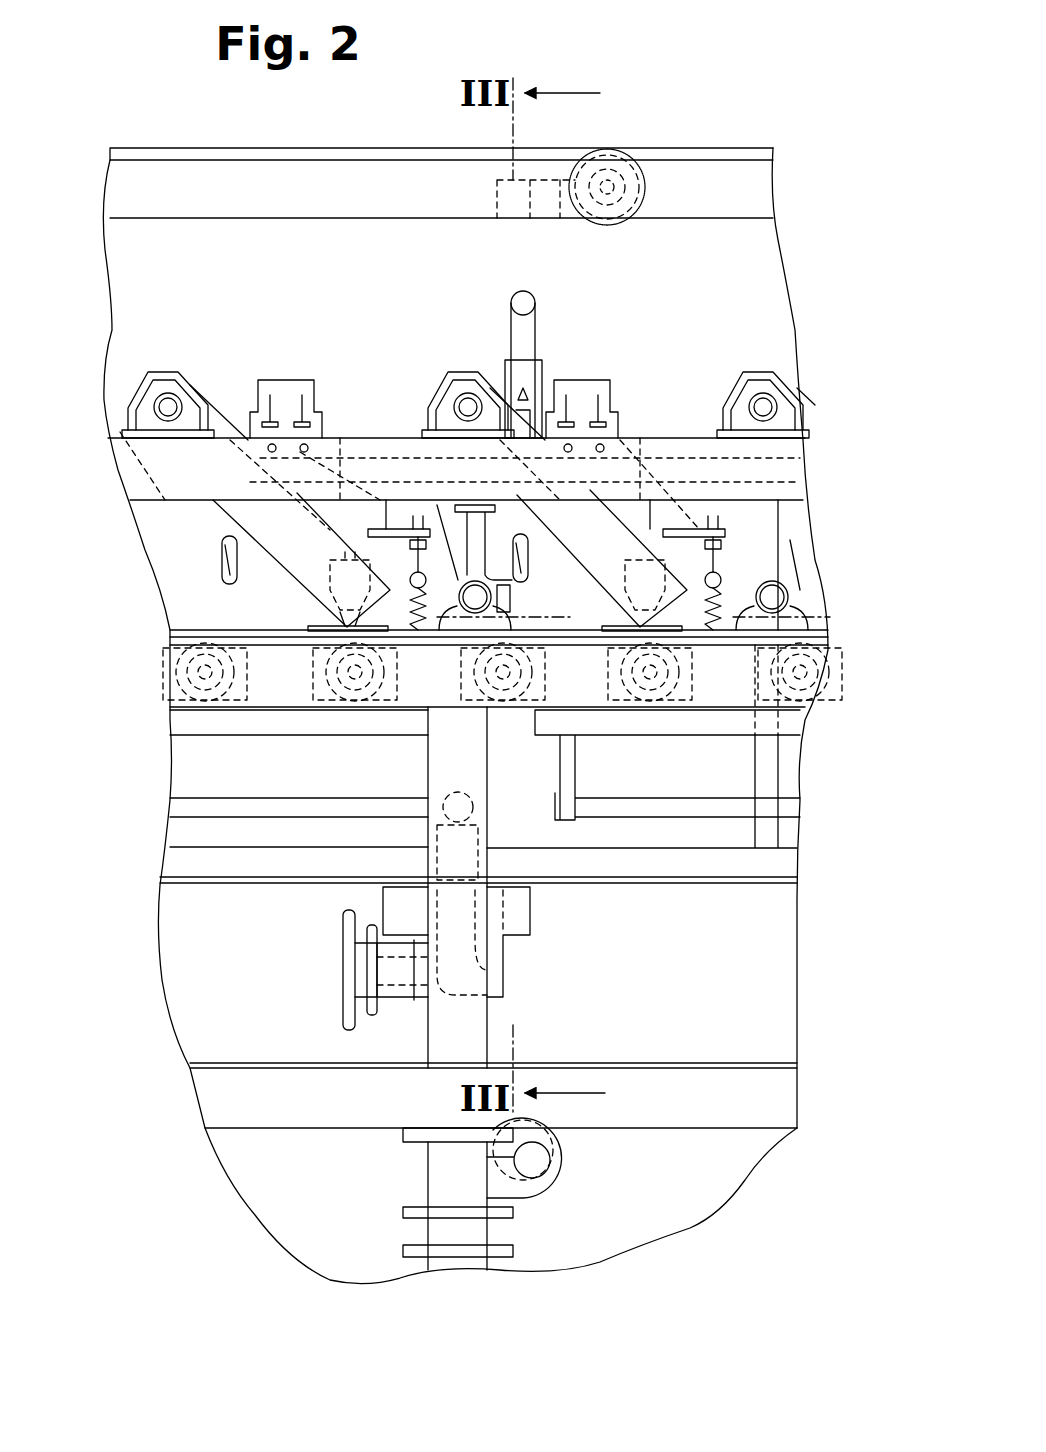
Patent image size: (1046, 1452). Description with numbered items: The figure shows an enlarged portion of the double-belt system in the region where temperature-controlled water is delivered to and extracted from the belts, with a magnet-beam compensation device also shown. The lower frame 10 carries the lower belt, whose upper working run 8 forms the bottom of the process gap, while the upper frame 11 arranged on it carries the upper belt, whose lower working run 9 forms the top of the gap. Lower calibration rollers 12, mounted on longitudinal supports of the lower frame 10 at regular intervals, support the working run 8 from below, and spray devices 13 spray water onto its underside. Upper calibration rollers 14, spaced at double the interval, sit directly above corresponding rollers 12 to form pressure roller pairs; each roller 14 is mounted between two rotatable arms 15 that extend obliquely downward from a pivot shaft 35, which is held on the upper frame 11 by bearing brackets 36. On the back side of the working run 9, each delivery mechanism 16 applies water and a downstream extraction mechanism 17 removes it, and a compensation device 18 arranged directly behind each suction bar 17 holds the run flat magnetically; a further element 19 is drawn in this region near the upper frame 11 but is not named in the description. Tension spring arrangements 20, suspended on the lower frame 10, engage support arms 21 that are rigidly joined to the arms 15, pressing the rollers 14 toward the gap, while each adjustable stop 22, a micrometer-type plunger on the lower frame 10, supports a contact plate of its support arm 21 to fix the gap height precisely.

The upper working run 8 is at (172, 655).
The lower working run 9 is at (180, 630).
The lower frame 10 is at (762, 1120).
The upper frame 11 is at (222, 195).
The calibration rollers 12 is at (702, 752).
The spray devices 13 is at (326, 950).
The calibration rollers 14 is at (298, 620).
The arms 15 is at (503, 400).
The delivery mechanism 16 is at (205, 567).
The extraction mechanism 17 is at (810, 580).
The compensation device 18 is at (514, 700).
The cylinder 19 is at (502, 437).
The tension spring arrangement 20 is at (800, 575).
The support arm 21 is at (386, 500).
The adjustable stop 22 is at (451, 416).
The pivot shaft 35 is at (140, 385).
The bearing brackets 36 is at (190, 395).